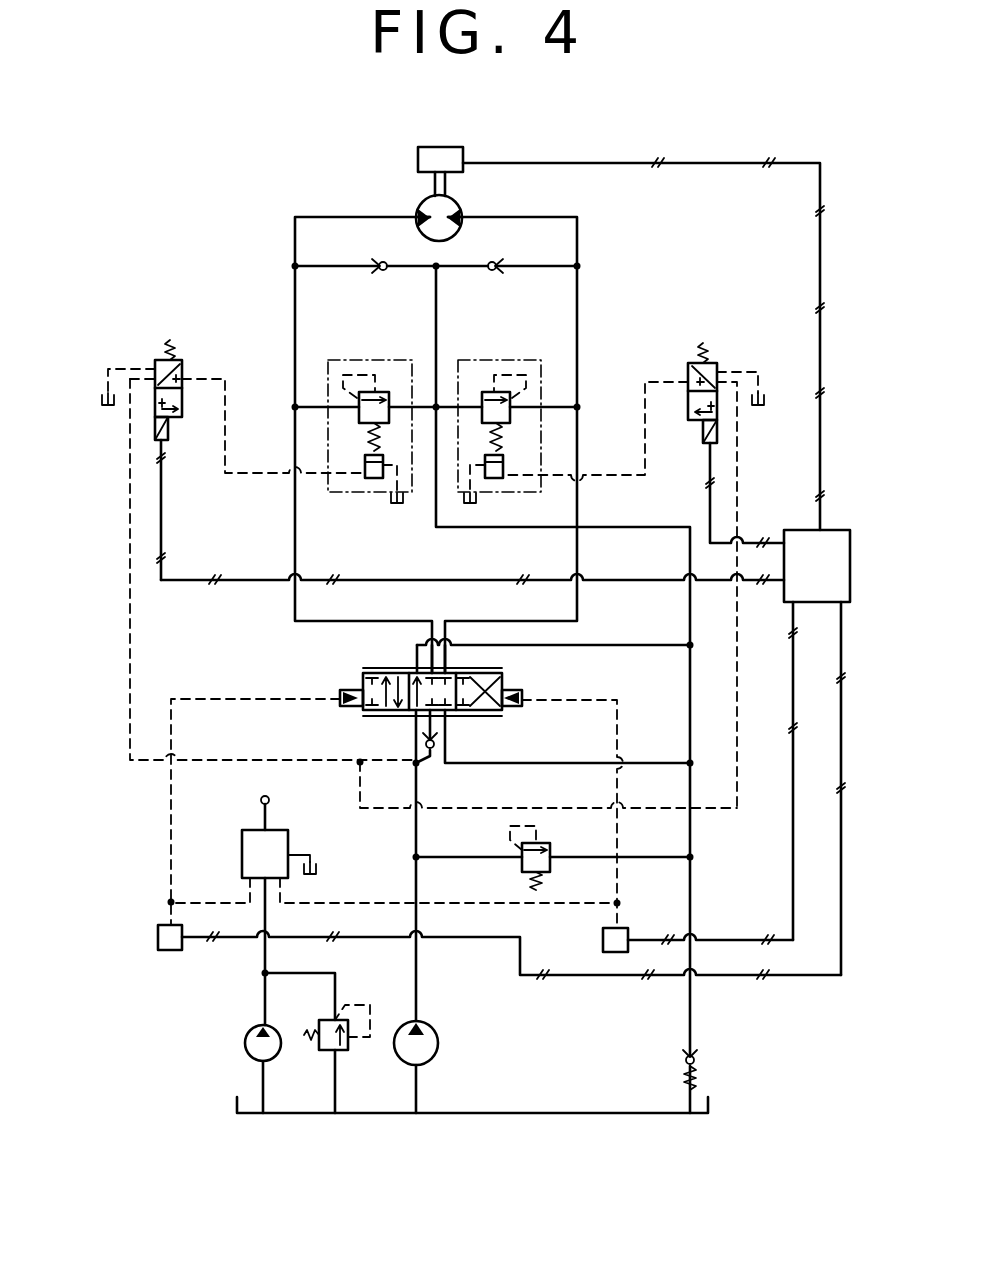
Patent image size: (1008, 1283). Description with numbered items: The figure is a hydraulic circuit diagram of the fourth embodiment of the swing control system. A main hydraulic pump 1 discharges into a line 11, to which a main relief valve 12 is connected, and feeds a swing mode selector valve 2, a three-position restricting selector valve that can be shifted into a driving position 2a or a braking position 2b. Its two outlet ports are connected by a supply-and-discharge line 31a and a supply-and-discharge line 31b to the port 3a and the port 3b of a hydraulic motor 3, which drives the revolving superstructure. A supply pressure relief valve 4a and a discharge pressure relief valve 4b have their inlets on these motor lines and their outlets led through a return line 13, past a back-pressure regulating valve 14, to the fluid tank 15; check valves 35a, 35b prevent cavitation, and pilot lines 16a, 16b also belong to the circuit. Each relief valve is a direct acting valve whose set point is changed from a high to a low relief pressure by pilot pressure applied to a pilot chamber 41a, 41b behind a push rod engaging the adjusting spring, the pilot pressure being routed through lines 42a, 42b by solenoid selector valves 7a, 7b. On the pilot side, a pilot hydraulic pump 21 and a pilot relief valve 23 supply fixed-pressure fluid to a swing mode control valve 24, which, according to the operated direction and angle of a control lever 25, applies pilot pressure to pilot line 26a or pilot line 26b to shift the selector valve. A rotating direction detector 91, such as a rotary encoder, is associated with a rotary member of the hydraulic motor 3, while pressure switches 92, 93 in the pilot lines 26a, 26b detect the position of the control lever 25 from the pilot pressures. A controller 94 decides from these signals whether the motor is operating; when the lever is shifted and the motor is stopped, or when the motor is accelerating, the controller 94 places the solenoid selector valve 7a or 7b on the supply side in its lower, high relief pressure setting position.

The main hydraulic pump 1 is at (438, 1046).
The swing mode selector valve 2 is at (504, 668).
The driving position 2a is at (375, 718).
The braking position 2b is at (480, 718).
The hydraulic motor 3 is at (458, 207).
The port of the hydraulic motor 3a is at (418, 224).
The port of the hydraulic motor 3b is at (462, 224).
The supply pressure relief valve 4a is at (375, 360).
The discharge pressure relief valve 4b is at (471, 360).
The solenoid selector valve 7a is at (160, 356).
The solenoid selector valve 7b is at (717, 363).
The line 11 is at (416, 982).
The main relief valve 12 is at (550, 845).
The return line 13 is at (690, 1018).
The back-pressure regulating valve 14 is at (696, 1060).
The fluid tank 15 is at (105, 410).
The pilot line 16a is at (130, 682).
The pilot line 16b is at (737, 630).
The pilot hydraulic pump 21 is at (245, 1046).
The pilot relief valve 23 is at (348, 1055).
The swing mode control valve 24 is at (288, 842).
The control lever 25 is at (270, 800).
The pilot line 26a is at (170, 790).
The pilot line 26b is at (620, 770).
The supply-and-discharge line 31a is at (295, 564).
The supply-and-discharge line 31b is at (577, 564).
The check valve 35a is at (378, 272).
The check valve 35b is at (494, 272).
The pilot chamber 41a is at (368, 480).
The pilot chamber 41b is at (494, 480).
The pilot line 42a is at (246, 478).
The pilot line 42b is at (600, 478).
The rotating direction detector 91 is at (418, 158).
The pressure switch 92 is at (172, 955).
The pressure switch 93 is at (603, 940).
The controller 94 is at (800, 530).